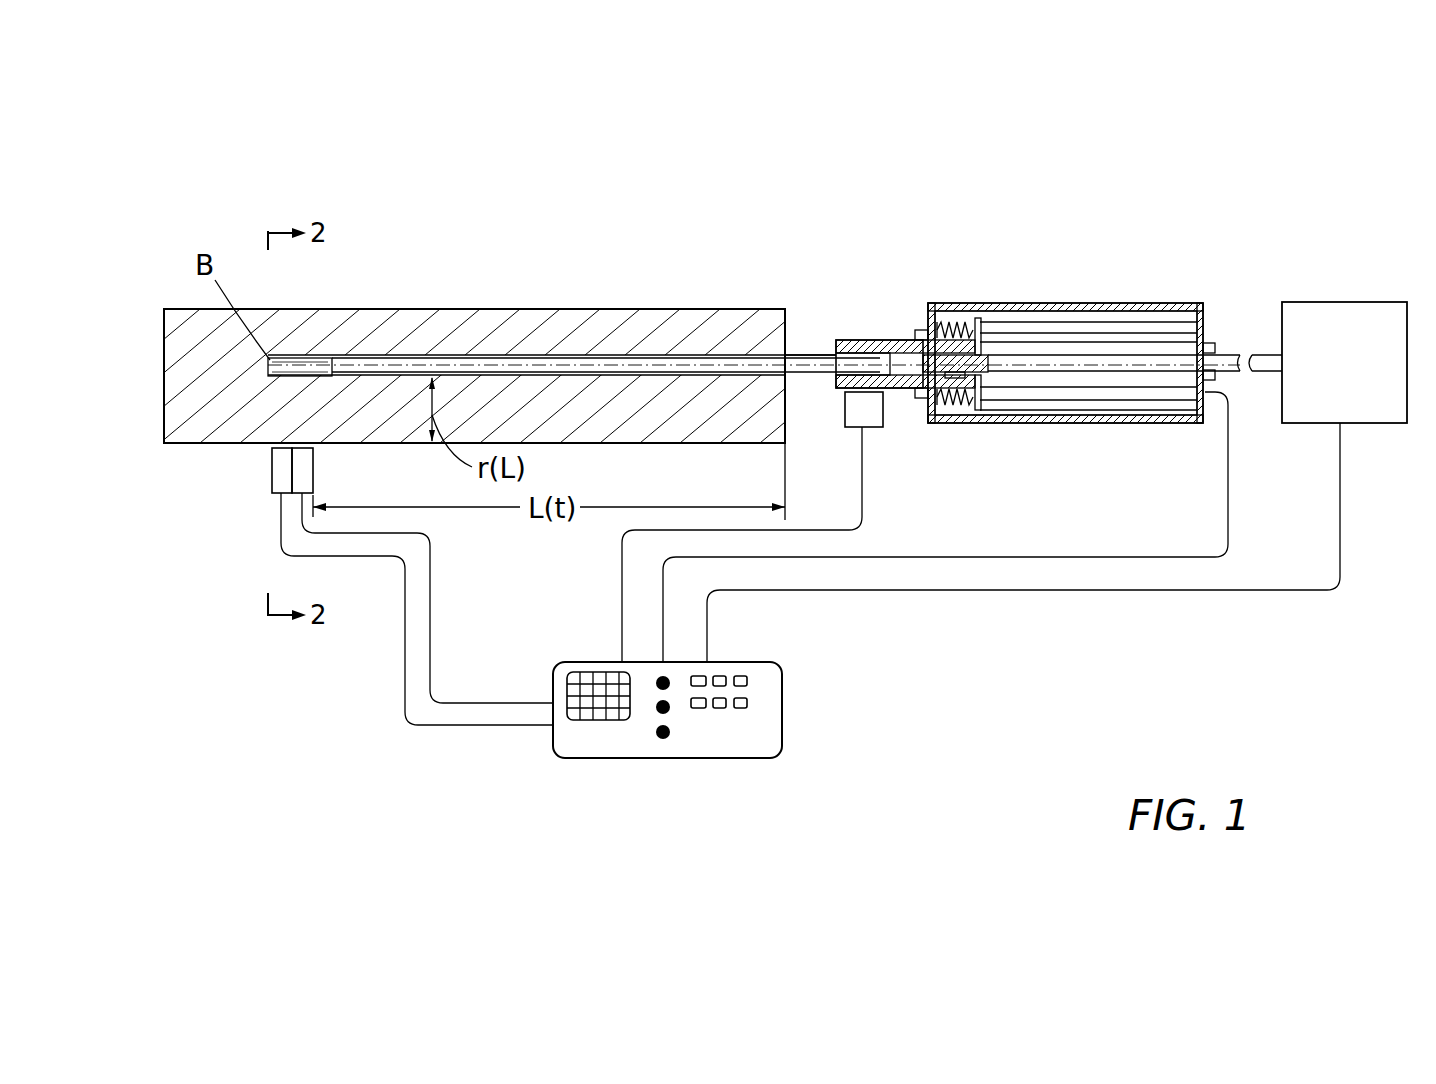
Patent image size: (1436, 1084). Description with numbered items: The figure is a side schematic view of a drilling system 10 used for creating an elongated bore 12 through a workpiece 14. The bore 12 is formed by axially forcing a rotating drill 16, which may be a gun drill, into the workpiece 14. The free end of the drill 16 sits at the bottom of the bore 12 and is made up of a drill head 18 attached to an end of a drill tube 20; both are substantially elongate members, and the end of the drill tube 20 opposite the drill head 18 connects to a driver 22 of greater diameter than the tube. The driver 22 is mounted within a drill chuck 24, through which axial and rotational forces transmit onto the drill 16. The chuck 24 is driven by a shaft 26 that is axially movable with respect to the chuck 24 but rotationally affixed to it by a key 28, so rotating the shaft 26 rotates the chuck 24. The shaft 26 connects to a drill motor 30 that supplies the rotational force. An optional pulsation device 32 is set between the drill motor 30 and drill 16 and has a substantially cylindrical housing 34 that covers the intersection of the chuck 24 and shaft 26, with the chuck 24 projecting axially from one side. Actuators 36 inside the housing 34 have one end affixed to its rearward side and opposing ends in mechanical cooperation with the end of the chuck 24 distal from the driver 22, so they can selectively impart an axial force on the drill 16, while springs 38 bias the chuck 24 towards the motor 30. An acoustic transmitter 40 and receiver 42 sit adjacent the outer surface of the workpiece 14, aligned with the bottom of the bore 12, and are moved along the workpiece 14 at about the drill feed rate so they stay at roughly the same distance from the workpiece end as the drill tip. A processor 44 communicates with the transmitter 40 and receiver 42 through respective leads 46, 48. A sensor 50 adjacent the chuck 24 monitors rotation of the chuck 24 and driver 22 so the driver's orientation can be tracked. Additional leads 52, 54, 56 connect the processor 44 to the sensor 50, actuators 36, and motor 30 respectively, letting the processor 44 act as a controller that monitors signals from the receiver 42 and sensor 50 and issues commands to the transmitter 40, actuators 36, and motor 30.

The drilling system 10 is at (764, 236).
The elongated bore 12 is at (797, 348).
The workpiece 14 is at (681, 318).
The drill 16 is at (502, 347).
The drill head 18 is at (308, 358).
The drill tube 20 is at (590, 358).
The driver 22 is at (858, 352).
The drill chuck 24 is at (905, 342).
The shaft 26 is at (1232, 352).
The key 28 is at (948, 395).
The drill motor 30 is at (1350, 302).
The pulsation device 32 is at (1054, 283).
The housing 34 is at (1130, 310).
The actuators 36 is at (1165, 330).
The springs 38 is at (958, 322).
The acoustic transmitter 40 is at (313, 468).
The receiver 42 is at (272, 470).
The processor 44 is at (685, 760).
The lead 46 is at (432, 640).
The lead 48 is at (404, 675).
The sensor 50 is at (880, 428).
The lead 52 is at (620, 597).
The lead 54 is at (1075, 556).
The lead 56 is at (1080, 592).